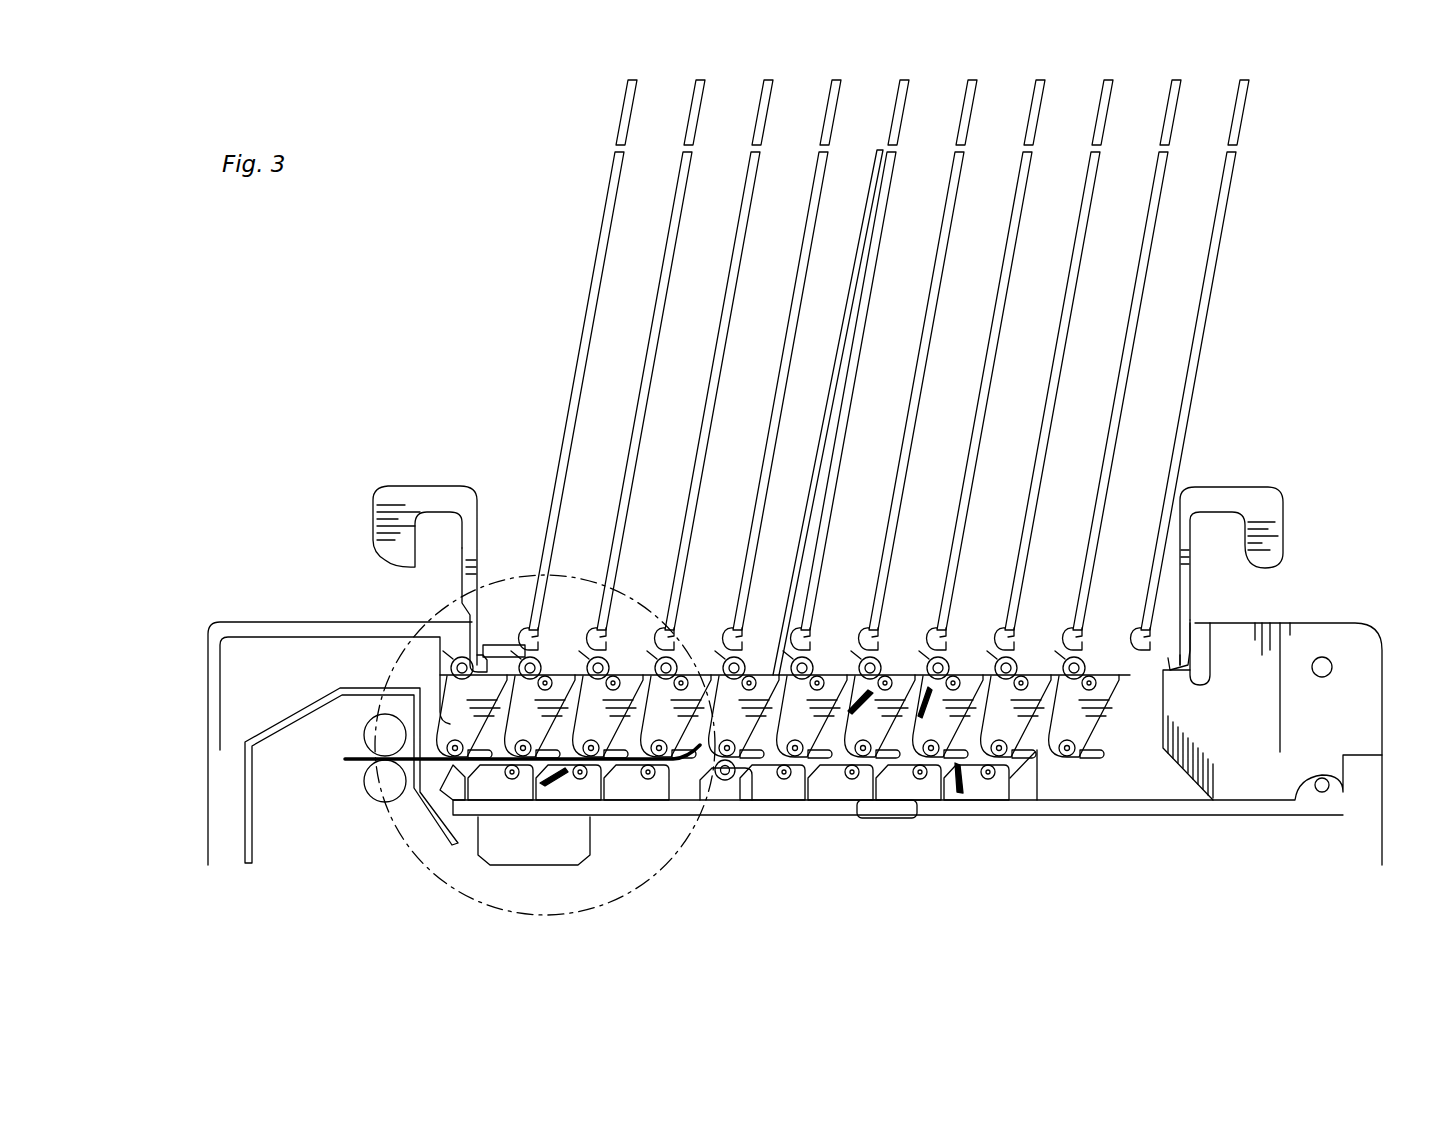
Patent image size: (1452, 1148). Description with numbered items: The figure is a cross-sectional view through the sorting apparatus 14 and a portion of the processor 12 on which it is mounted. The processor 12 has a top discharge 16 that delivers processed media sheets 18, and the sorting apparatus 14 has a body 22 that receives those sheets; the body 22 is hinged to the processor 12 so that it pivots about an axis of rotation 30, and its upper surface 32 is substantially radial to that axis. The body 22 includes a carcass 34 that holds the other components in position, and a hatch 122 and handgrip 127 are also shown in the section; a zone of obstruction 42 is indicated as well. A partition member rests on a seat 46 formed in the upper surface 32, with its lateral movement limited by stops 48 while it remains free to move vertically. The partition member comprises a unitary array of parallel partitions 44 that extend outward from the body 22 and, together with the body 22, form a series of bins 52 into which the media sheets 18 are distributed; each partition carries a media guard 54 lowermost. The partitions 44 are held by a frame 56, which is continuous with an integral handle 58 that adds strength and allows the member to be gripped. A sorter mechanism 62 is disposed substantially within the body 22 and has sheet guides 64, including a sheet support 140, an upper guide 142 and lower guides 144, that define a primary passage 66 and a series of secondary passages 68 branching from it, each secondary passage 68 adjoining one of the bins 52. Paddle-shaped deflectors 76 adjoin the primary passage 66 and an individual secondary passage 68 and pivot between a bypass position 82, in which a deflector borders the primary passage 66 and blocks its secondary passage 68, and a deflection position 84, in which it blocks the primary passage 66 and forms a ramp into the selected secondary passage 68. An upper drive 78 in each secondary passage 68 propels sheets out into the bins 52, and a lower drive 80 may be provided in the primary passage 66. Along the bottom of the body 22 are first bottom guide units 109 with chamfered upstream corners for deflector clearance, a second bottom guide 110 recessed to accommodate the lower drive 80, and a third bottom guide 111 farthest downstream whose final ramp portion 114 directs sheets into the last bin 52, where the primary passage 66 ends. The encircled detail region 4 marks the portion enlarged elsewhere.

The detail circle 4 is at (370, 885).
The processor 12 is at (208, 822).
The sorting apparatus 14 is at (480, 352).
The discharge 16 is at (285, 722).
The media sheets 18 is at (800, 560).
The body 22 is at (322, 622).
The axis of rotation 30 is at (1322, 657).
The upper surface 32 is at (250, 620).
The carcass 34 is at (208, 634).
The zone of obstruction 42 is at (588, 159).
The partitions 44 is at (755, 152).
The seat 46 is at (503, 655).
The stops 48 is at (493, 575).
The bins 52 is at (624, 392).
The media guards 54 is at (730, 632).
The frame 56 is at (453, 545).
The handle 58 is at (385, 485).
The sorter mechanism 62 is at (832, 840).
The sheet guides 64 is at (790, 870).
The primary passage 66 is at (958, 770).
The secondary passages 68 is at (925, 688).
The deflectors 76 is at (613, 762).
The upper drive 78 is at (556, 655).
The lower drive 80 is at (738, 778).
The bypass position 82 is at (613, 762).
The deflection position 84 is at (694, 770).
The first bottom guide unit 109 is at (878, 817).
The second bottom guide unit 110 is at (760, 812).
The third bottom guide unit 111 is at (1040, 797).
The final ramp portion 114 is at (1098, 735).
The hatch 122 is at (1188, 818).
The handgrip 127 is at (543, 866).
The sheet support 140 is at (772, 655).
The upper guide 142 is at (1020, 660).
The lower guides 144 is at (1033, 760).